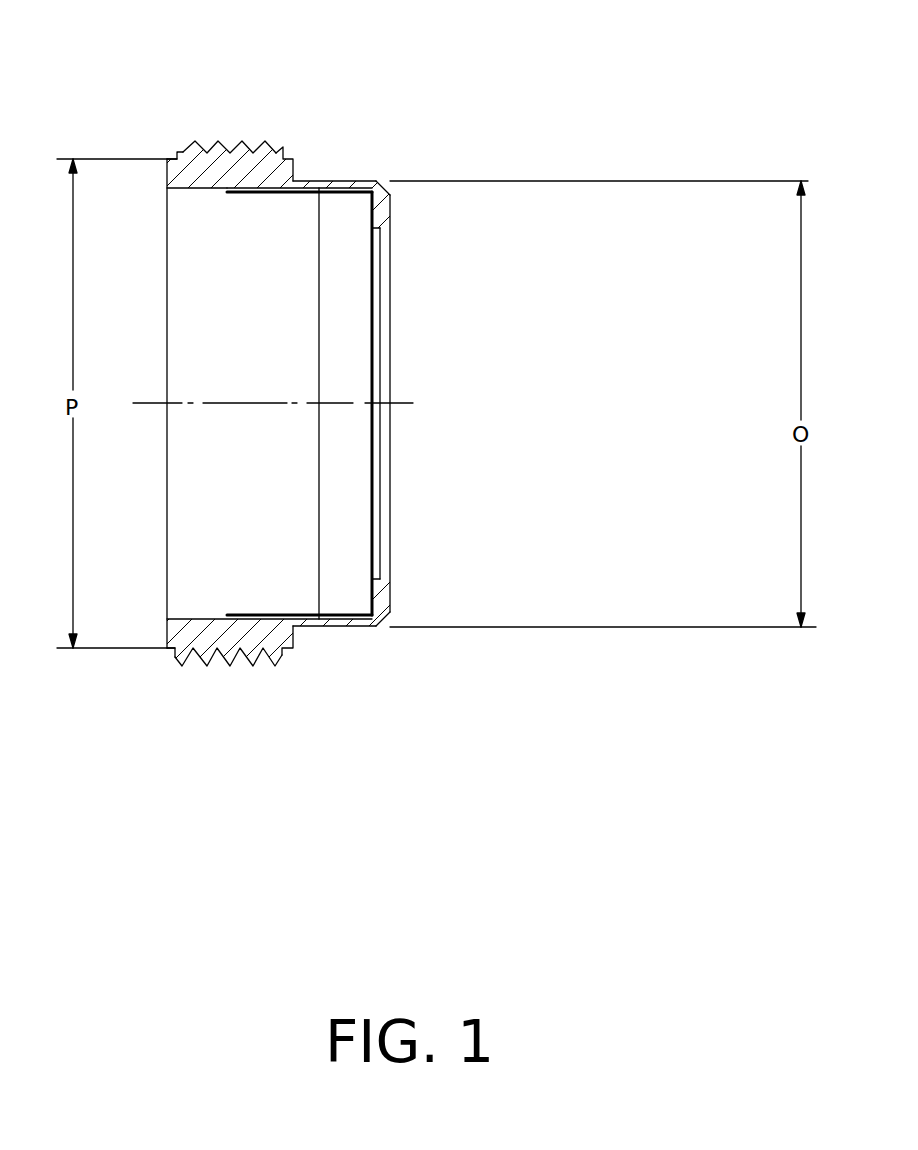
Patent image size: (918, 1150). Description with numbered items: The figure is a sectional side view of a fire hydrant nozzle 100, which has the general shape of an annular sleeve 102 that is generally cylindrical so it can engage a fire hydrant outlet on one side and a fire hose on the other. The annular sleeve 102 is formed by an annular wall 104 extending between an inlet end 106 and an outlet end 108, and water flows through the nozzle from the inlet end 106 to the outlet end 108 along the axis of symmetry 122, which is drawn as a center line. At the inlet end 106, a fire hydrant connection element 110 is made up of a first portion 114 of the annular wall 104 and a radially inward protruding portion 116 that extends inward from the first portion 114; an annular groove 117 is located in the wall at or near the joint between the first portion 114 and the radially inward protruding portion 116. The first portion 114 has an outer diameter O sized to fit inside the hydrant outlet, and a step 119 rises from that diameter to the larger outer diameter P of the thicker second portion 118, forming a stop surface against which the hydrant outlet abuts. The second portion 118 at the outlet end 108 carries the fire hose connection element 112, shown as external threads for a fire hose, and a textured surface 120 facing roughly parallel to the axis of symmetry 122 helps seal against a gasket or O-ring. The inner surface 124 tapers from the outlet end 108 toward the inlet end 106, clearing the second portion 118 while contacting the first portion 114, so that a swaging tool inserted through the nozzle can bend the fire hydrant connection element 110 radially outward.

The fire hydrant nozzle 100 is at (203, 78).
The annular sleeve 102 is at (305, 181).
The annular wall 104 is at (288, 192).
The inlet end 106 is at (393, 307).
The outlet end 108 is at (167, 300).
The fire hydrant connection element 110 is at (398, 172).
The fire hose connection element 112 is at (218, 141).
The first portion 114 is at (343, 198).
The radially inward protruding portion 116 is at (375, 228).
The annular groove 117 is at (376, 181).
The second portion 118 is at (203, 193).
The step 119 is at (293, 152).
The textured surface 120 is at (168, 183).
The axis of symmetry 122 is at (395, 404).
The inner surface 124 is at (210, 617).